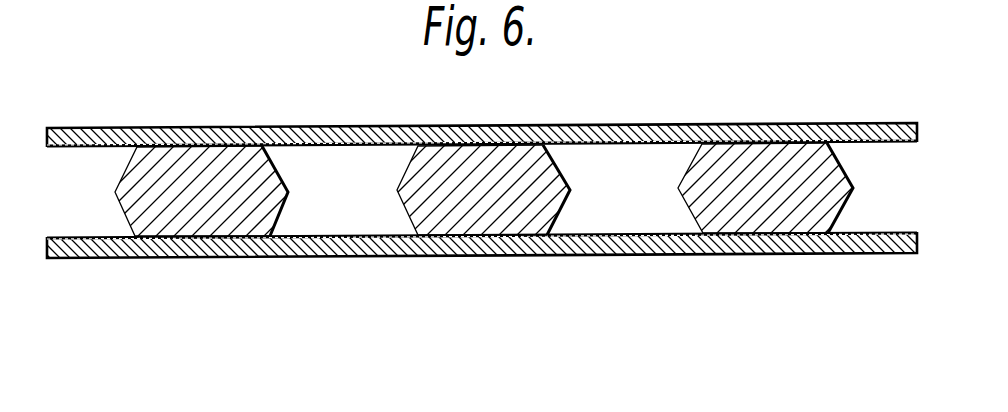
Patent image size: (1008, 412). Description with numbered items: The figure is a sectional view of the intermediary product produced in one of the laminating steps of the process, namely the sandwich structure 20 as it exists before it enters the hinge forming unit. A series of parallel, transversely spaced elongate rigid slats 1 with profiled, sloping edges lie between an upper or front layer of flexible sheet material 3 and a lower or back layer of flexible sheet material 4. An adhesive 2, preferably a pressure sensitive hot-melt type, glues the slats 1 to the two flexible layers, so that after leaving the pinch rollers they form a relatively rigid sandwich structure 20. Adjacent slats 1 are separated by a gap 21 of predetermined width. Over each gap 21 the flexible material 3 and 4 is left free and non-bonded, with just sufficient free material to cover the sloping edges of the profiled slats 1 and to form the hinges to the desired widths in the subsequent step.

The slats 1 is at (755, 215).
The adhesive 2 is at (207, 233).
The upper or front layer of flexible sheet material 3 is at (338, 127).
The lower or back layer of flexible sheet material 4 is at (322, 247).
The sandwich structure 20 is at (504, 189).
The gap 21 is at (630, 174).